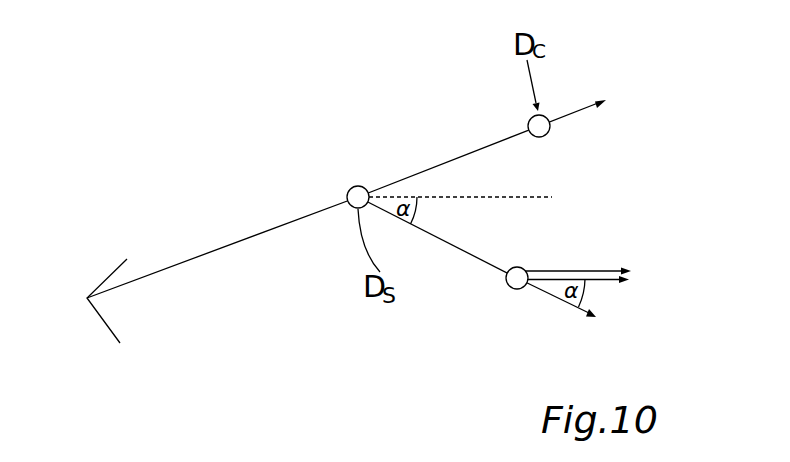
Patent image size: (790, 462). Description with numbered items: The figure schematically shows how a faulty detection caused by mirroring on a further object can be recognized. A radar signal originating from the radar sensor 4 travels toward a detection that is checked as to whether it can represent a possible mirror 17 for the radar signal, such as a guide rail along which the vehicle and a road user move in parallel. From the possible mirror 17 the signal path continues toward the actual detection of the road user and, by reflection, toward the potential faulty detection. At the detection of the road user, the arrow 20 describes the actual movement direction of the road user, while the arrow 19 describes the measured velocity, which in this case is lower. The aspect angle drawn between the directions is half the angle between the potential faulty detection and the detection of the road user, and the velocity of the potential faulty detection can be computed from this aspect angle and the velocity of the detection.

The radar sensor 4 is at (101, 284).
The possible mirror 17 is at (353, 176).
The arrow describing the measured velocity 19 is at (601, 282).
The arrow describing the actual movement direction 20 is at (610, 270).